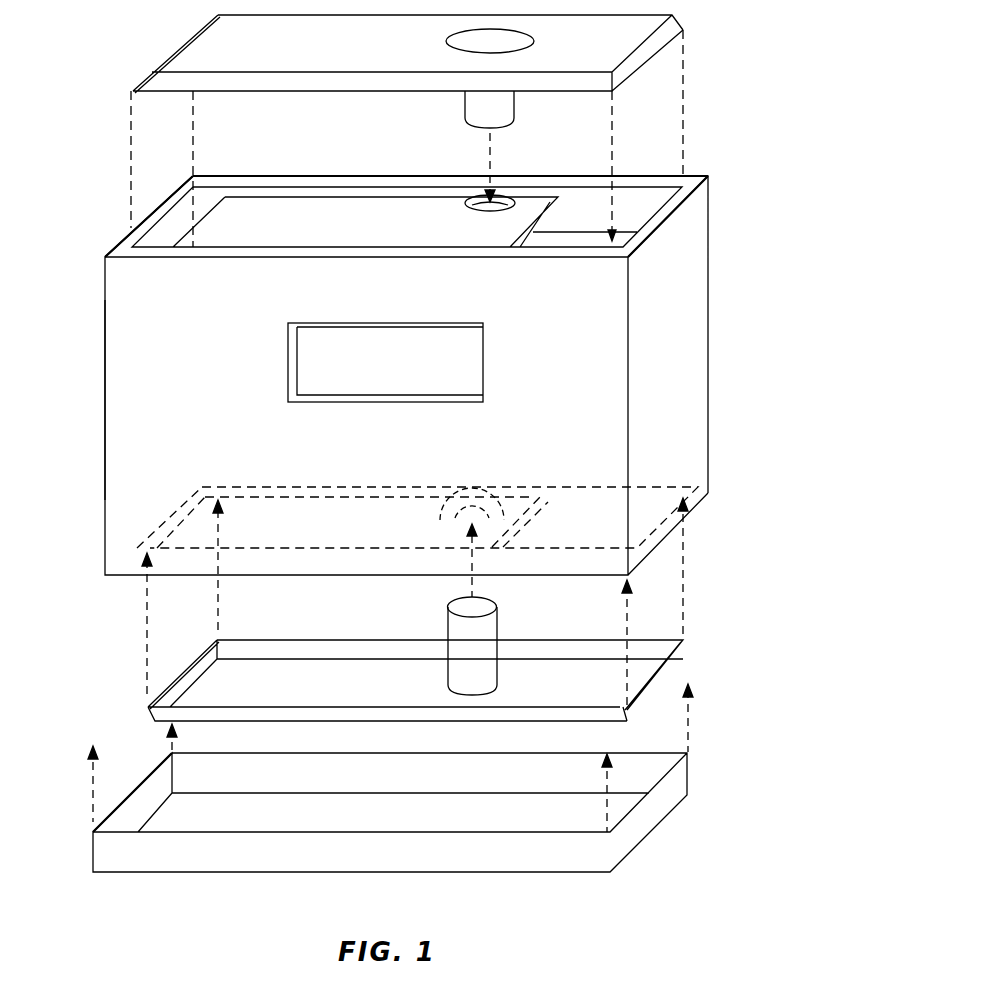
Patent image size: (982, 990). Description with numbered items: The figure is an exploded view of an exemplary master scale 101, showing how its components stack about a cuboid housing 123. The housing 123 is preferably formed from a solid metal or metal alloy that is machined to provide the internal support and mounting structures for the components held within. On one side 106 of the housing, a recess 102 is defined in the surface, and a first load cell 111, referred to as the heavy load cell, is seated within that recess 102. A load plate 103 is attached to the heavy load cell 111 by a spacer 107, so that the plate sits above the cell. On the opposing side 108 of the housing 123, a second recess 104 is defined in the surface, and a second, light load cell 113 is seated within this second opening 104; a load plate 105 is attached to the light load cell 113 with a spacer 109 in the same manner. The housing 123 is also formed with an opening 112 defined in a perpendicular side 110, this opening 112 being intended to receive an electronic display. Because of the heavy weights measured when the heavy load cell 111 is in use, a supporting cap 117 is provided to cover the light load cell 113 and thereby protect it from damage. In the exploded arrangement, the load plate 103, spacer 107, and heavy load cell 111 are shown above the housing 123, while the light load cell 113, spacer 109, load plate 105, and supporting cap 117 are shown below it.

The master scale 101 is at (772, 138).
The recess 102 is at (600, 192).
The load plate 103 is at (324, 66).
The second recess 104 is at (590, 505).
The load plate 105 is at (320, 692).
The first side 106 is at (112, 240).
The spacer 107 is at (466, 125).
The opposing side 108 is at (125, 597).
The spacer 109 is at (448, 628).
The perpendicular side 110 is at (215, 430).
The first load cell 111 is at (348, 238).
The opening 112 is at (460, 323).
The second load cell 113 is at (297, 538).
The supporting cap 117 is at (690, 777).
The cuboid housing 123 is at (105, 397).